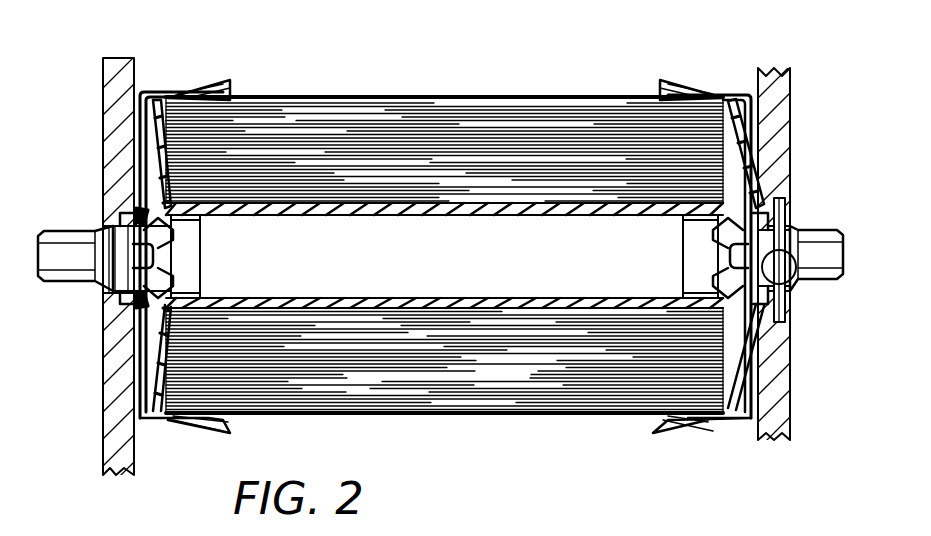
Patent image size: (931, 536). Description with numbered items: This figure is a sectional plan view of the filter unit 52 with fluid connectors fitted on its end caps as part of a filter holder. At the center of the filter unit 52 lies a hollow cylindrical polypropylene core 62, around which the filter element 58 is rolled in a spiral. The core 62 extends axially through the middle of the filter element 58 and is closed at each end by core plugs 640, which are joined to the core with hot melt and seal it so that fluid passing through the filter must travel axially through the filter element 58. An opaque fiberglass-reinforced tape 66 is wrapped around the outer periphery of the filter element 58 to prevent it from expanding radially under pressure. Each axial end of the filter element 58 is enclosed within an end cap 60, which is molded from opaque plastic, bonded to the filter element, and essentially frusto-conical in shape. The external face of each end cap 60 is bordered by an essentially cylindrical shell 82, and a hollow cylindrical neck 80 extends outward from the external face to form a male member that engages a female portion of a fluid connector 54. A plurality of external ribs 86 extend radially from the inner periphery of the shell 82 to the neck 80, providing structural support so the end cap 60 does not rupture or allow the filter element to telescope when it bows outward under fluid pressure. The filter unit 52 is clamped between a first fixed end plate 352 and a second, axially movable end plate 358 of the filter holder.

The filter unit 52 is at (444, 231).
The fluid connector 54 is at (435, 230).
The filter element 58 is at (445, 233).
The end cap 60 is at (449, 255).
The core 62 is at (444, 255).
The tape 66 is at (445, 439).
The neck 80 is at (803, 261).
The shell 82 is at (511, 115).
The ribs 86 is at (500, 212).
The first fixed end plate 352 is at (806, 254).
The second end plate 358 is at (82, 275).
The core plugs 640 is at (443, 221).